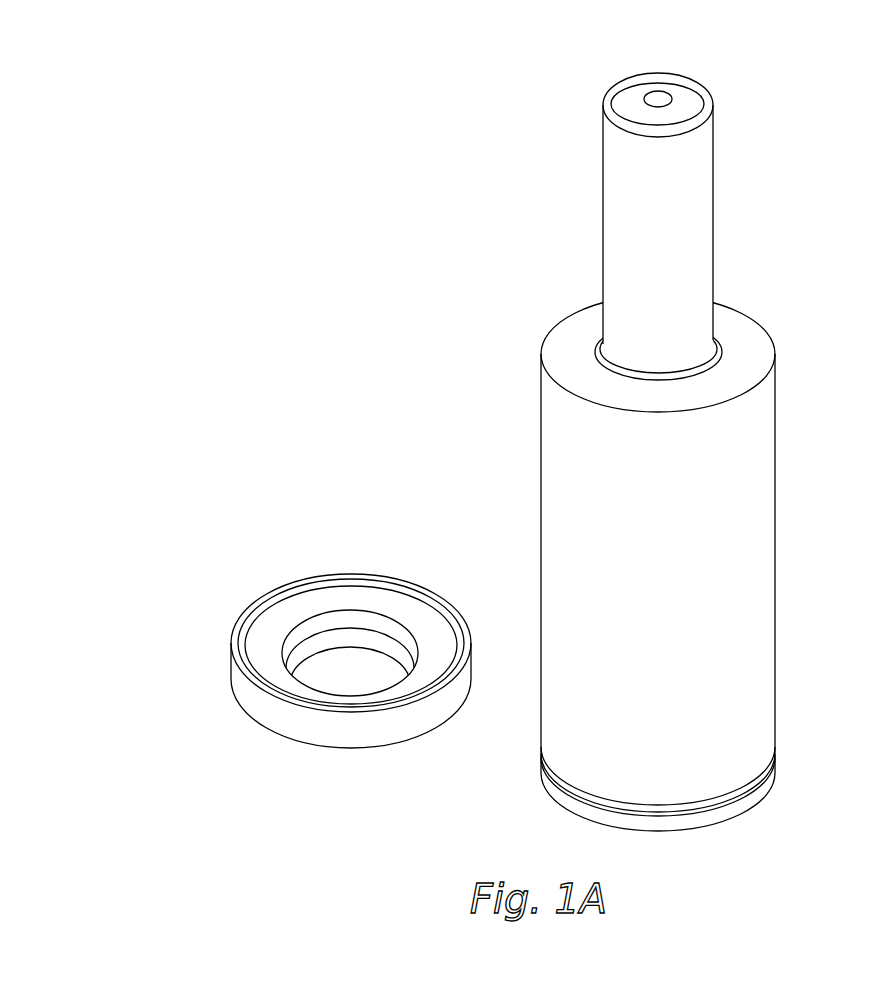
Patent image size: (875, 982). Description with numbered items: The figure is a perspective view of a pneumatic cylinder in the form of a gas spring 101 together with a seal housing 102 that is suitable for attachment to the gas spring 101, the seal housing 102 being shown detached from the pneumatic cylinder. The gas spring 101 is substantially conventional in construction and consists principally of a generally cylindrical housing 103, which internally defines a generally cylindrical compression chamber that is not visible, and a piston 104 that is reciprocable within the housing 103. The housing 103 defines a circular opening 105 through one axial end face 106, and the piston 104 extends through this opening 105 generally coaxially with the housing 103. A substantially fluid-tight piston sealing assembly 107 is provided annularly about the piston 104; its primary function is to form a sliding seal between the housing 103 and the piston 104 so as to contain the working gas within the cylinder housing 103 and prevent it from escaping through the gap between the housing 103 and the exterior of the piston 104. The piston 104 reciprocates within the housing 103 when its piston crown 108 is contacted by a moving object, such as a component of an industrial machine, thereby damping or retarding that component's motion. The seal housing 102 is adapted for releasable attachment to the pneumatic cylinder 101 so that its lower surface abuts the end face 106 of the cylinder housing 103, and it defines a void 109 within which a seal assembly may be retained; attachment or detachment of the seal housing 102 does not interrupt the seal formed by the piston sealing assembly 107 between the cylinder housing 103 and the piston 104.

The gas spring 101 is at (434, 219).
The seal housing 102 is at (199, 534).
The cylindrical housing 103 is at (755, 585).
The piston 104 is at (702, 172).
The circular opening 105 is at (589, 320).
The axial end face 106 is at (750, 338).
The piston sealing assembly 107 is at (598, 348).
The piston crown 108 is at (687, 93).
The void 109 is at (351, 600).